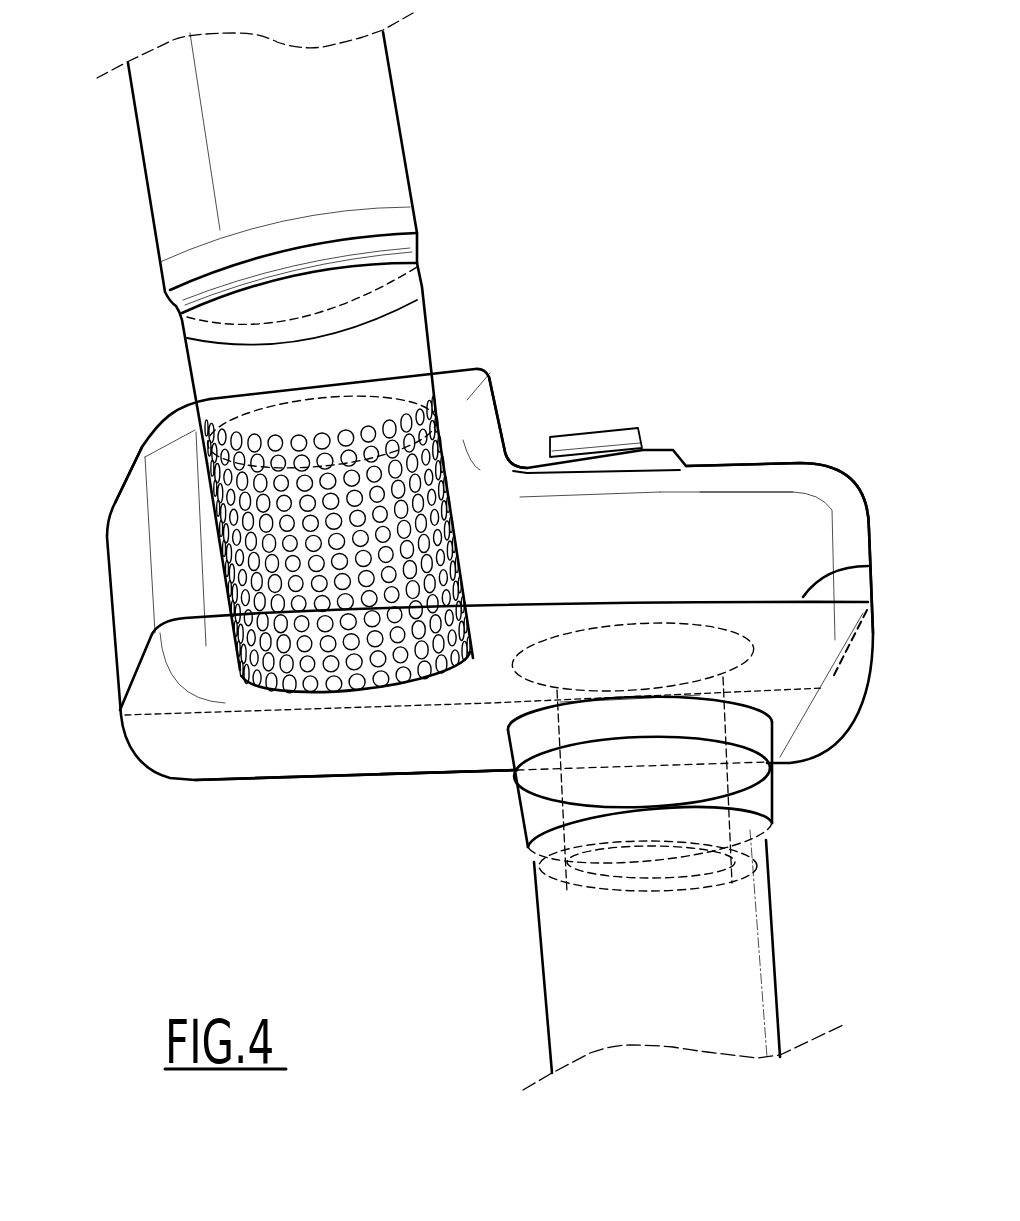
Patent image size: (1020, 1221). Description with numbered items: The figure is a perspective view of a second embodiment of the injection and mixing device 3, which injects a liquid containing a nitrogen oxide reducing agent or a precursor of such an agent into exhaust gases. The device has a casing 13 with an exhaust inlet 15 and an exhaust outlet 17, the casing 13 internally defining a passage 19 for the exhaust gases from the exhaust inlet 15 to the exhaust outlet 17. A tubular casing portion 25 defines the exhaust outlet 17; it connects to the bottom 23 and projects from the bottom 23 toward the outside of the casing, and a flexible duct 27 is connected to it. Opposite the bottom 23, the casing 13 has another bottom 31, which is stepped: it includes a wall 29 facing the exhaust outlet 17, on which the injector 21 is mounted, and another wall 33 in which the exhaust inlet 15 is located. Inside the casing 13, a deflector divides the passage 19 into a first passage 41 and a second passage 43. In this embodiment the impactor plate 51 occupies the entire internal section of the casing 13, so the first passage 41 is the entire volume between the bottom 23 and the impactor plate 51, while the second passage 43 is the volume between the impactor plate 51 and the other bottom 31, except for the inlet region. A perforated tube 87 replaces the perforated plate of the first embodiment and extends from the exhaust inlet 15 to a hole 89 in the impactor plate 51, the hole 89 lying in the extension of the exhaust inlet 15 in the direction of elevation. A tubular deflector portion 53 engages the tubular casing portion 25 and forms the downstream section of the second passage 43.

The injection and mixing device 3 is at (838, 352).
The casing 13 is at (128, 592).
The exhaust inlet 15 is at (185, 452).
The exhaust outlet 17 is at (773, 818).
The passage 19 is at (798, 533).
The injector 21 is at (607, 430).
The bottom 23 is at (412, 735).
The tubular casing portion 25 is at (515, 817).
The flexible duct 27 is at (775, 943).
The wall 29 is at (721, 465).
The other bottom 31 is at (508, 415).
The other wall 33 is at (130, 467).
The first passage 41 is at (347, 743).
The second passage 43 is at (723, 528).
The impactor plate 51 is at (868, 567).
The tubular deflector portion 53 is at (768, 793).
The perforated tube 87 is at (405, 403).
The hole 89 is at (297, 700).